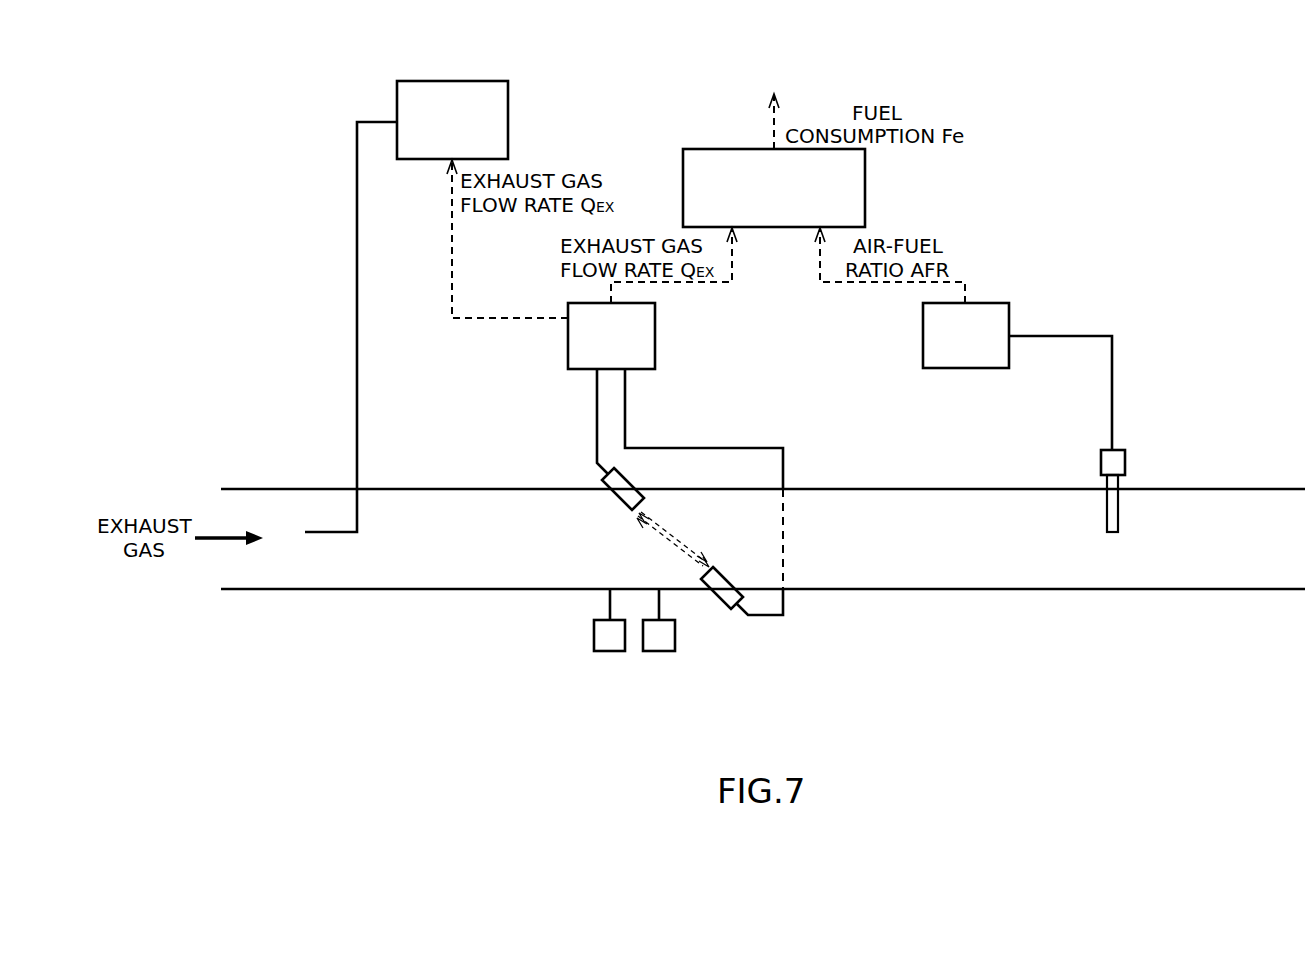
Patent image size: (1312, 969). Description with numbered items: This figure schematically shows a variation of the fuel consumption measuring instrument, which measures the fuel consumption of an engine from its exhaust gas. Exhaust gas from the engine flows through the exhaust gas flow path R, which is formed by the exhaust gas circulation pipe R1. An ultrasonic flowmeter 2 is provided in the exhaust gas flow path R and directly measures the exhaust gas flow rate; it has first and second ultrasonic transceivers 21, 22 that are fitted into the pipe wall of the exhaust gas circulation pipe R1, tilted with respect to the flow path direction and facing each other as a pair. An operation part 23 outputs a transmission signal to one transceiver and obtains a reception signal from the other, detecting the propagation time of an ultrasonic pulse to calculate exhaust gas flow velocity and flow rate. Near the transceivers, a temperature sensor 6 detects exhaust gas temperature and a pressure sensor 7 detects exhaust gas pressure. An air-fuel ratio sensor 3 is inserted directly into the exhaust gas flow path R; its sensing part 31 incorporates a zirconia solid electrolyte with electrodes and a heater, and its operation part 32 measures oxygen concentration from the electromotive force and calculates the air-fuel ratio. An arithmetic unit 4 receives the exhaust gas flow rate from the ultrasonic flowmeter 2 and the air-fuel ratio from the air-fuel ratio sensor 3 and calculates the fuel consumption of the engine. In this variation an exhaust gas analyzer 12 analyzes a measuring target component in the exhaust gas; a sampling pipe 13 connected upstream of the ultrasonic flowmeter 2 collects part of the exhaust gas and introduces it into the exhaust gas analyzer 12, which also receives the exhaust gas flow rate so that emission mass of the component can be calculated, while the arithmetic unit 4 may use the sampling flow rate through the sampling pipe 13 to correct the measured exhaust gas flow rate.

The ultrasonic flowmeter 2 is at (680, 483).
The air-fuel ratio sensor 3 is at (1059, 384).
The arithmetic unit 4 is at (865, 187).
The temperature sensor 6 is at (608, 651).
The pressure sensor 7 is at (675, 635).
The exhaust gas analyzer 12 is at (508, 121).
The sampling pipe 13 is at (356, 440).
The first ultrasonic transceiver 21 is at (621, 502).
The second ultrasonic transceiver 22 is at (727, 572).
The operation part 23 is at (568, 346).
The sensing part 31 is at (1125, 465).
The operation part 32 is at (965, 368).
The exhaust gas flow path R is at (880, 557).
The exhaust gas circulation pipe R1 is at (482, 589).